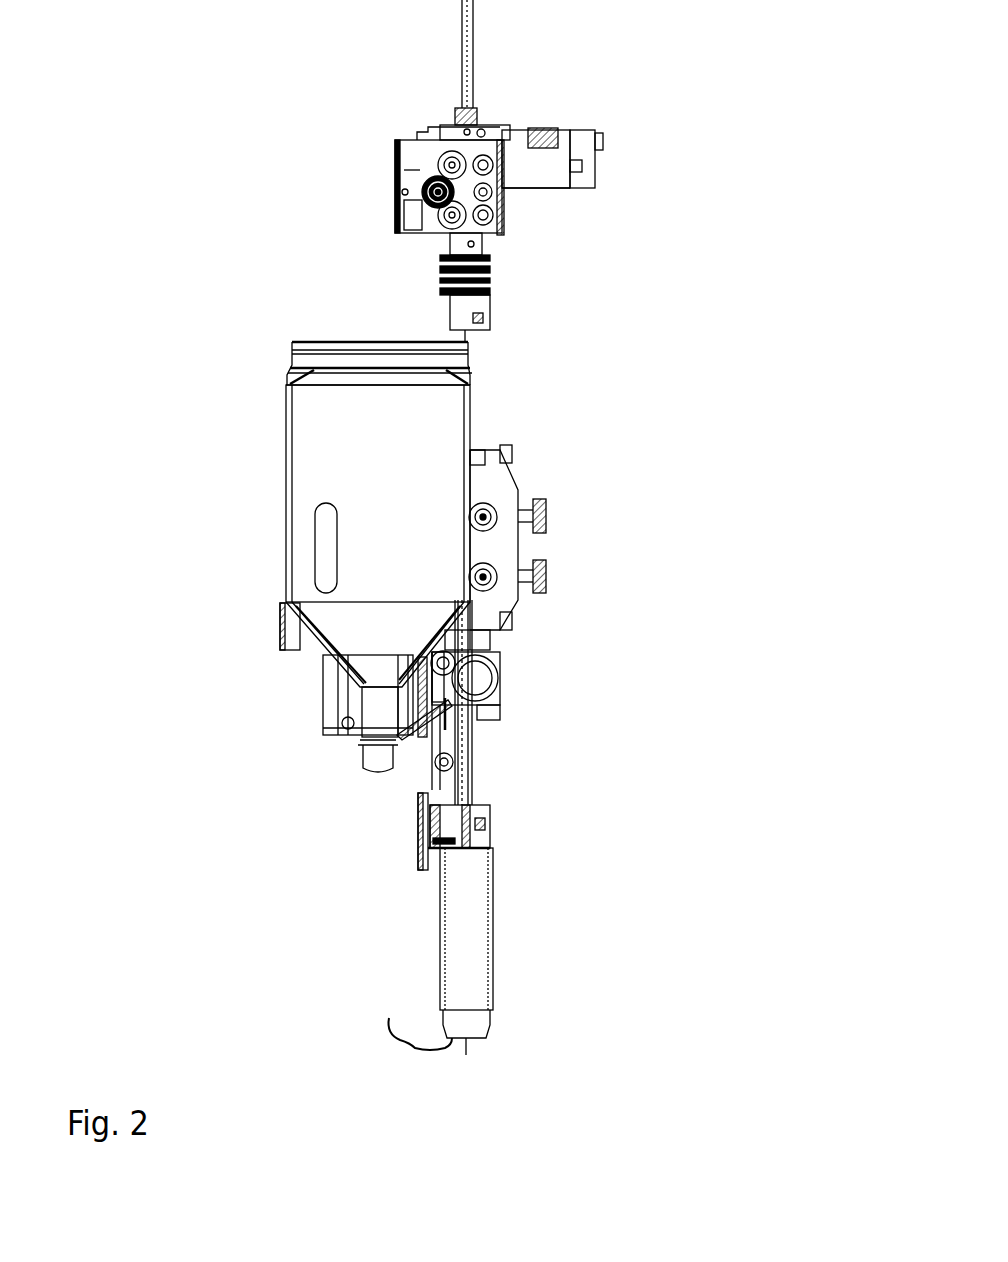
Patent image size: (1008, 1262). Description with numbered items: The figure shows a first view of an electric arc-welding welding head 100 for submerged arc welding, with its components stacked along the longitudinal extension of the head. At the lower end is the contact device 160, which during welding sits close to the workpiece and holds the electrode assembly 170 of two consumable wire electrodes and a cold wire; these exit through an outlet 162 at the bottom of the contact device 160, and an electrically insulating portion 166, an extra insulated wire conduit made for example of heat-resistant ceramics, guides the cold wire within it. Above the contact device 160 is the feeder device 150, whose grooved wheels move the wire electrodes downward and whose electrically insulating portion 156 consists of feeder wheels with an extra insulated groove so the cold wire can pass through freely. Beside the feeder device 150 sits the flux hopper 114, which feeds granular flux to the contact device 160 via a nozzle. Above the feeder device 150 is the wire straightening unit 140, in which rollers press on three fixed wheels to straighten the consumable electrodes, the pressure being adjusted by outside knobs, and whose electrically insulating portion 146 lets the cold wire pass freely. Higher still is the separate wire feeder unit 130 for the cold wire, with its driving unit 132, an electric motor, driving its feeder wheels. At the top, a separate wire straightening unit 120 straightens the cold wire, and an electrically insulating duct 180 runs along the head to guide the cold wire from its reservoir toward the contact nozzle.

The electric arc-welding welding head 100 is at (211, 280).
The flux hopper 114 is at (316, 468).
The wire straightening unit 120 is at (498, 109).
The wire feeder unit 130 is at (370, 176).
The driving unit 132 is at (583, 160).
The wire straightening unit 140 is at (589, 540).
The electrically insulating portion 146 is at (532, 546).
The feeder device 150 is at (526, 665).
The electrically insulating portion 156 is at (443, 663).
The contact device 160 is at (455, 915).
The outlet 162 is at (407, 1019).
The electrically insulating portion 166 is at (522, 862).
The electrode assembly 170 is at (505, 1033).
The electrically insulating duct 180 is at (442, 81).